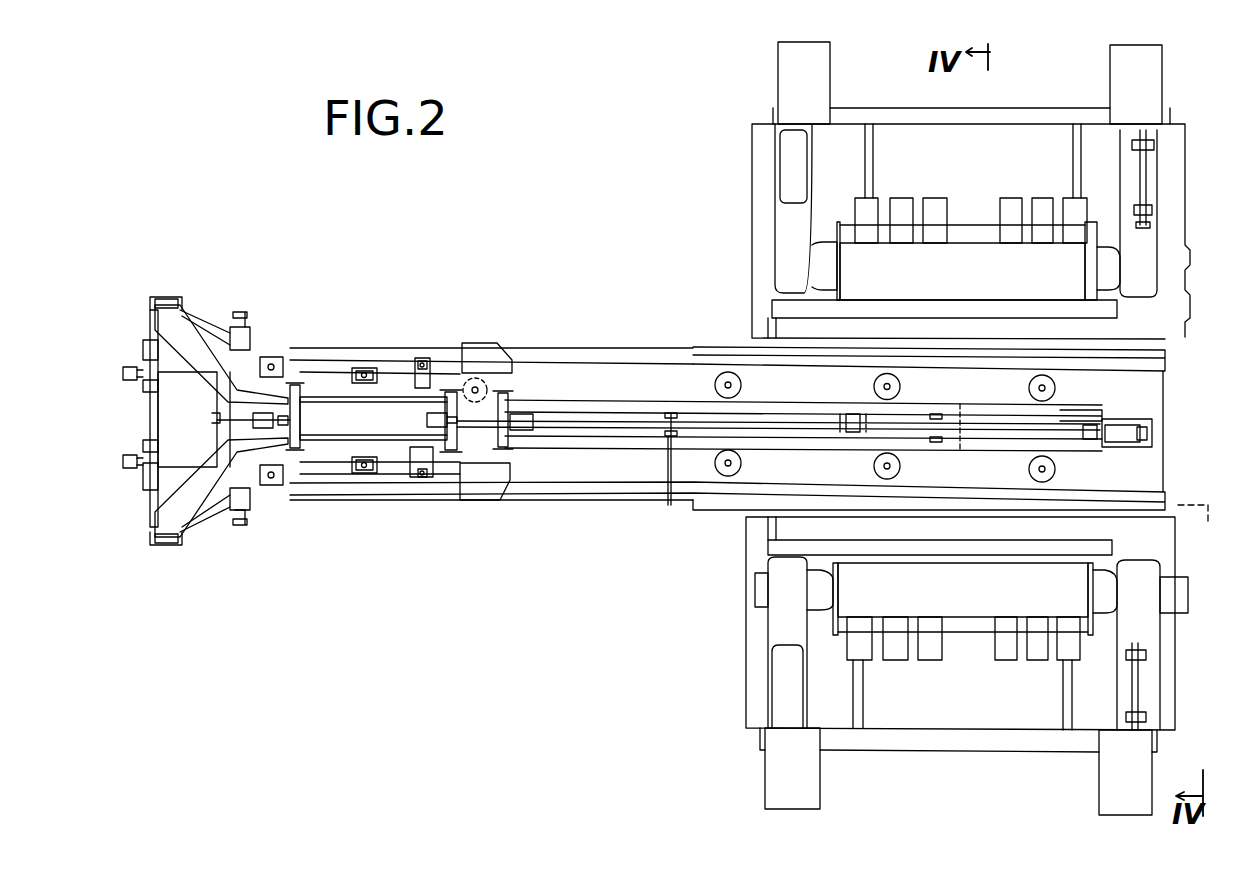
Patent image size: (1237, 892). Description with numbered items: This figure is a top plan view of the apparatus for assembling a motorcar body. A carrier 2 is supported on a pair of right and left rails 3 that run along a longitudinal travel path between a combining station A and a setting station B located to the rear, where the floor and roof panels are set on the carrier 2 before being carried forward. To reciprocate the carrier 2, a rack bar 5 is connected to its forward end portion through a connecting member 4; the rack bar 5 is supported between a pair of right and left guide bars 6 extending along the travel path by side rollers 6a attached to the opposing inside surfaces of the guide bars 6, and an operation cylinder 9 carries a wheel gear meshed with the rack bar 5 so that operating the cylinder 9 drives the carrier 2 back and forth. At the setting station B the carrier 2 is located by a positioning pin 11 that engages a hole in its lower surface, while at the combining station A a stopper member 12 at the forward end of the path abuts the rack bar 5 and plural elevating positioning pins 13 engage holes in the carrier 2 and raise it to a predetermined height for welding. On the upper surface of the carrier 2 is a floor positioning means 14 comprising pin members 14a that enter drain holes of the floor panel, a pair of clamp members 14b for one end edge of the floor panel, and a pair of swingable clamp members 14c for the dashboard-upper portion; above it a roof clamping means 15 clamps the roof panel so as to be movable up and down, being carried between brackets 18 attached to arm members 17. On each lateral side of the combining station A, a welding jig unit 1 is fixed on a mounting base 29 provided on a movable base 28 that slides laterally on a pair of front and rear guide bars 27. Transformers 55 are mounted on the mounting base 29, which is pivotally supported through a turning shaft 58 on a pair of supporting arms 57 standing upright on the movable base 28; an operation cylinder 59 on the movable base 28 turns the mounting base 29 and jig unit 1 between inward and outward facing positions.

The welding jig unit 1 is at (1108, 318).
The carrier 2 is at (323, 462).
The rail 3 is at (574, 360).
The connecting member 4 is at (527, 430).
The rack bar 5 is at (540, 420).
The guide bar 6 is at (633, 440).
The side roller 6a is at (671, 440).
The operation cylinder 9 is at (960, 422).
The positioning pin 11 is at (475, 388).
The stopper member 12 is at (1088, 424).
The elevating positioning pin 13 is at (728, 463).
The floor positioning means 14 is at (364, 356).
The pin member 14a is at (365, 470).
The clamp member 14b is at (133, 372).
The swingable clamp member 14c is at (243, 332).
The roof clamping means 15 is at (298, 372).
The arm member 17 is at (187, 340).
The bracket 18 is at (392, 390).
The guide bar 27 is at (790, 63).
The movable base 28 is at (760, 182).
The mounting base 29 is at (976, 255).
The transformer 55 is at (936, 205).
The supporting arm 57 is at (790, 258).
The turning shaft 58 is at (825, 275).
The operation cylinder 59 is at (1147, 186).
The combining station A is at (918, 385).
The setting station B is at (332, 392).